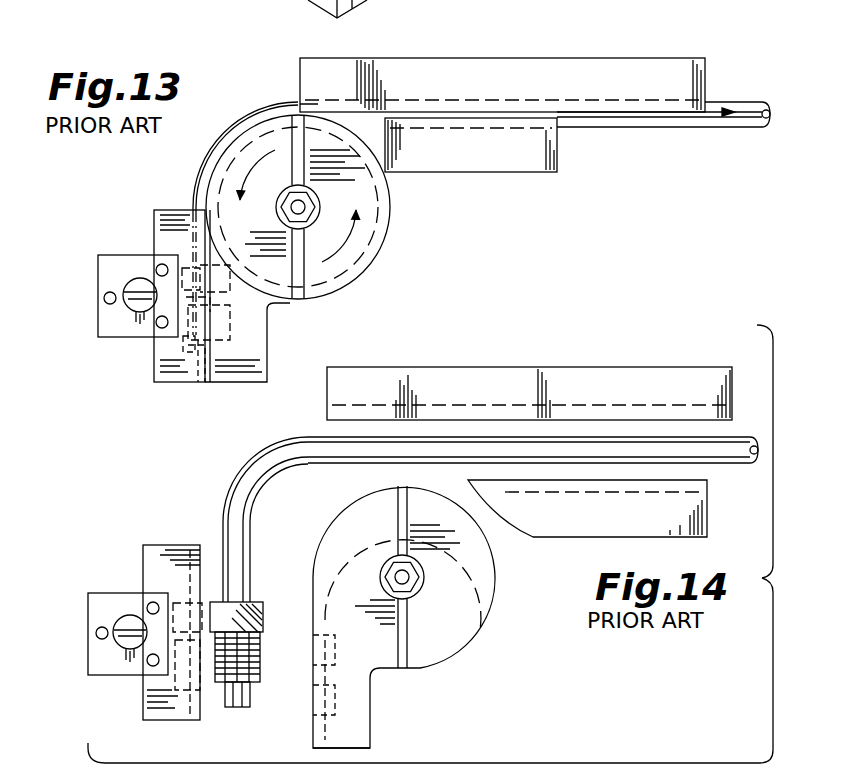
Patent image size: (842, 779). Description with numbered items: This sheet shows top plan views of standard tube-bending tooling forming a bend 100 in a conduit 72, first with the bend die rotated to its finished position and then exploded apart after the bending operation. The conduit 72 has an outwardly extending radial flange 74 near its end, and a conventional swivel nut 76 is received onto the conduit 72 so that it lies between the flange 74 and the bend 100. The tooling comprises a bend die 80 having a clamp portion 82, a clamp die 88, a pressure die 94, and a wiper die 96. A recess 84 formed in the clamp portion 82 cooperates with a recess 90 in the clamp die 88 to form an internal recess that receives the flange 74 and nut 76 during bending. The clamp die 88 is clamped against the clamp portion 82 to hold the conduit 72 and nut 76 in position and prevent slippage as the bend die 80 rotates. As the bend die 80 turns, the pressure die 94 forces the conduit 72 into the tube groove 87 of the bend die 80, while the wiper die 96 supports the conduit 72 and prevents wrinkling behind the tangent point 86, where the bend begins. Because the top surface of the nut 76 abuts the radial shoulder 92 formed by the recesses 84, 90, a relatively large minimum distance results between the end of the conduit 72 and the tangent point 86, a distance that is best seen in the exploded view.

In FIG. 13, the conduit 72 is at (742, 101).
In FIG. 14, the conduit 72 is at (742, 472).
In FIG. 13, the radial flange 74 is at (196, 345).
In FIG. 14, the radial flange 74 is at (258, 684).
In FIG. 13, the swivel nut 76 is at (298, 207).
In FIG. 14, the swivel nut 76 is at (255, 601).
In FIG. 13, the bend die 80 is at (391, 203).
In FIG. 14, the bend die 80 is at (495, 627).
In FIG. 13, the clamp portion 82 is at (243, 372).
In FIG. 14, the clamp portion 82 is at (360, 733).
In FIG. 13, the recess 84 is at (225, 326).
In FIG. 14, the recess 84 is at (316, 693).
In FIG. 13, the tangent point 86 is at (200, 203).
In FIG. 13, the tube groove 87 is at (375, 263).
In FIG. 14, the tube groove 87 is at (445, 654).
In FIG. 13, the clamp die 88 is at (160, 242).
In FIG. 14, the clamp die 88 is at (130, 565).
In FIG. 13, the recess 90 is at (178, 352).
In FIG. 14, the recess 90 is at (195, 660).
In FIG. 13, the radial shoulder 92 is at (197, 257).
In FIG. 14, the radial shoulder 92 is at (178, 608).
In FIG. 13, the pressure die 94 is at (541, 58).
In FIG. 14, the pressure die 94 is at (637, 362).
In FIG. 13, the wiper die 96 is at (557, 160).
In FIG. 14, the wiper die 96 is at (567, 544).
In FIG. 14, the bend 100 is at (258, 472).